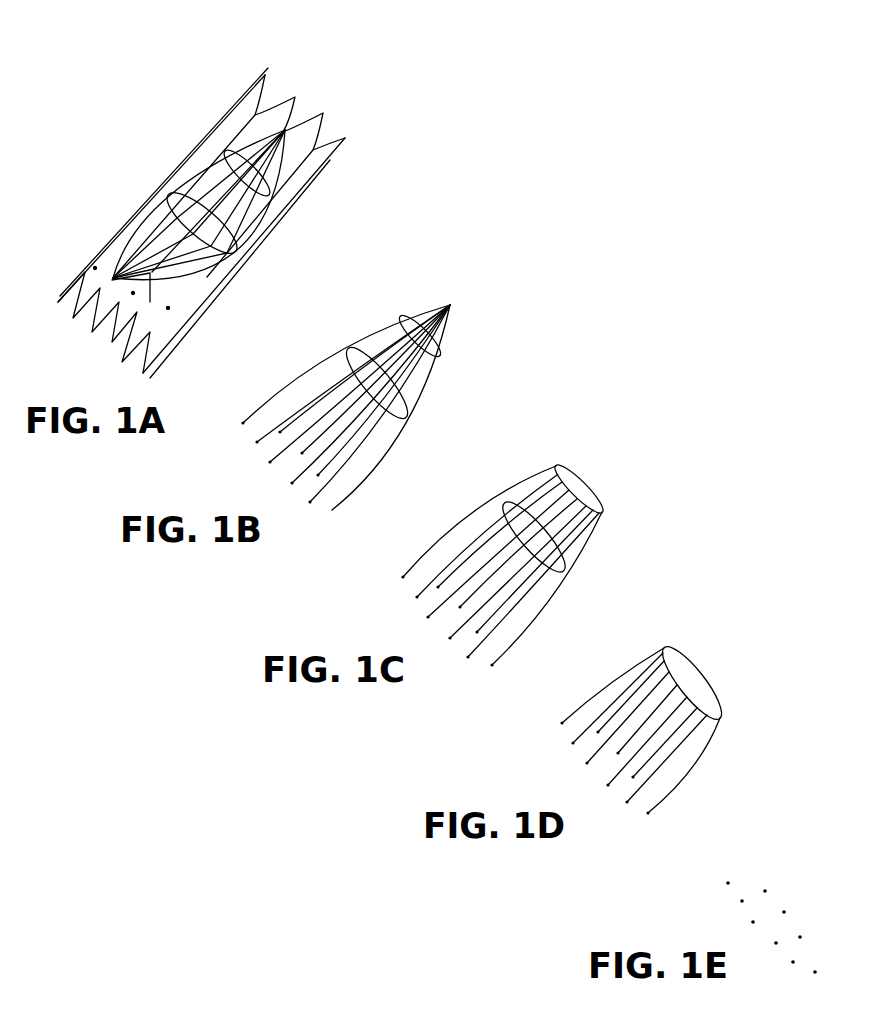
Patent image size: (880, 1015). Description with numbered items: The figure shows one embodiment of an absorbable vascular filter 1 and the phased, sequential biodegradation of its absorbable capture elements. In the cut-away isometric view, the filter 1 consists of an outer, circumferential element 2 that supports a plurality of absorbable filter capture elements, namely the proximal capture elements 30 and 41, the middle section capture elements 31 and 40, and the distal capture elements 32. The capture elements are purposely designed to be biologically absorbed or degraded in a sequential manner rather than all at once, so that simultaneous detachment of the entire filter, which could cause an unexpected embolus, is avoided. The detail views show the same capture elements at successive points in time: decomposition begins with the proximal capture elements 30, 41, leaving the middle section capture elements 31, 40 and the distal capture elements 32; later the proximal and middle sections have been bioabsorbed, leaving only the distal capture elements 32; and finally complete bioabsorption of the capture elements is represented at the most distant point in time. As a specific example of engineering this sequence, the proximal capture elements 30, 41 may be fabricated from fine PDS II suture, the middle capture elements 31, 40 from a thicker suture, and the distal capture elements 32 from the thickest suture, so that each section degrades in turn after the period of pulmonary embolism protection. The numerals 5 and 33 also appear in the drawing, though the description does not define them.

In FIG. 1A, the absorbable vascular filter 1 is at (354, 67).
In FIG. 1A, the outer circumferential element 2 is at (112, 242).
In FIG. 1B, the delivery catheter / guidewire 5 is at (332, 510).
In FIG. 1A, the proximal capture elements 30 is at (283, 167).
In FIG. 1B, the proximal capture elements 30 is at (455, 307).
In FIG. 1B, the middle section capture elements 31 is at (430, 375).
In FIG. 1C, the middle section capture elements 31 is at (590, 527).
In FIG. 1B, the distal capture elements 32 is at (372, 468).
In FIG. 1C, the distal capture elements 32 is at (497, 662).
In FIG. 1D, the distal capture elements 32 is at (683, 775).
In FIG. 1E, the strut cross-sections 33 is at (784, 912).
In FIG. 1A, the middle capture element 40 is at (263, 225).
In FIG. 1B, the middle capture element 40 is at (405, 403).
In FIG. 1C, the middle capture element 40 is at (572, 560).
In FIG. 1D, the middle capture element 40 is at (690, 660).
In FIG. 1A, the proximal capture element 41 is at (193, 153).
In FIG. 1B, the proximal capture element 41 is at (440, 345).
In FIG. 1C, the proximal capture element 41 is at (587, 488).